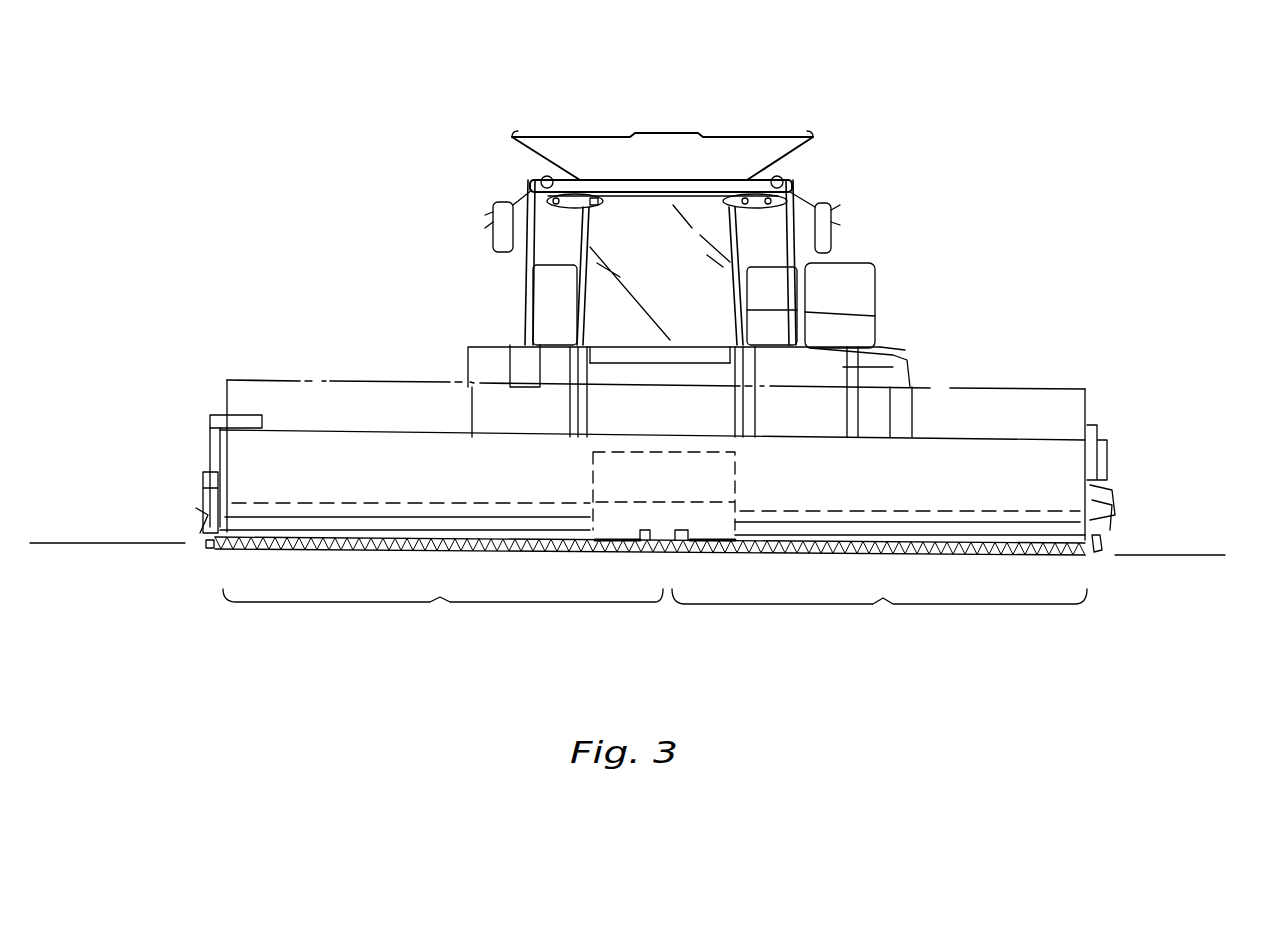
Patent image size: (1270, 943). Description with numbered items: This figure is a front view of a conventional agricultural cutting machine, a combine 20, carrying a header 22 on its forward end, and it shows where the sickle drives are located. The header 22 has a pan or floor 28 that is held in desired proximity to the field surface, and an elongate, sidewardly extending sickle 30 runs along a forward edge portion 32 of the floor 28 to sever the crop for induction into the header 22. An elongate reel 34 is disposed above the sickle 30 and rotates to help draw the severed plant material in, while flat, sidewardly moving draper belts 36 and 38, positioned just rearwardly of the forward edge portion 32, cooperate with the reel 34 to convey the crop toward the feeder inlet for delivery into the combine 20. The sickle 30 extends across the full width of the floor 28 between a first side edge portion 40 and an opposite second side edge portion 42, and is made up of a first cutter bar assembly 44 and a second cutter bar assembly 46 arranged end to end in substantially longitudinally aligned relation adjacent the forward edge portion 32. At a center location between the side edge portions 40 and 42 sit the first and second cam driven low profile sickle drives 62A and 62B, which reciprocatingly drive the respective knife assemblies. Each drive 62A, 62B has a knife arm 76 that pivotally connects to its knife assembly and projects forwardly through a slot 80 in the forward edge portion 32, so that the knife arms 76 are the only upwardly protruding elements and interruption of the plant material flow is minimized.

The combine 20 is at (1018, 95).
The header 22 is at (1100, 425).
The floor 28 is at (1040, 527).
The knife arm 76 is at (982, 503).
The sickle 30 is at (1002, 558).
The forward edge portion 32 is at (537, 525).
The reel 34 is at (1030, 388).
The draper belt 36 is at (925, 513).
The draper belt 38 is at (318, 505).
The first side edge portion 40 is at (212, 543).
The second side edge portion 42 is at (1100, 548).
The first cutter bar assembly 44 is at (443, 614).
The second cutter bar assembly 46 is at (879, 616).
The first cam driven low profile sickle drive 62A is at (637, 544).
The second cam driven low profile sickle drive 62B is at (693, 544).
The slot 80 is at (595, 546).